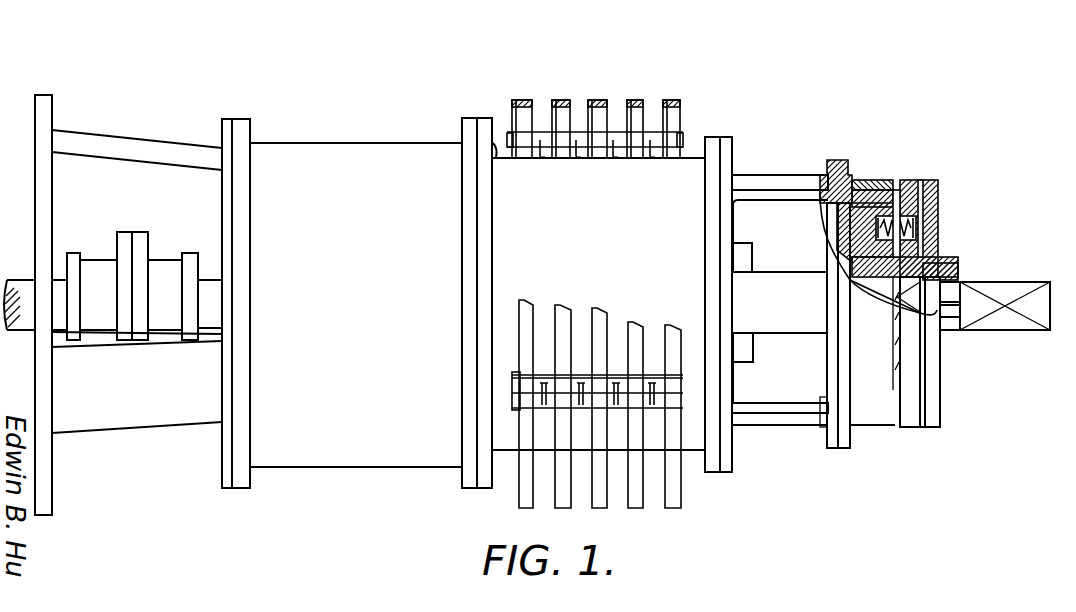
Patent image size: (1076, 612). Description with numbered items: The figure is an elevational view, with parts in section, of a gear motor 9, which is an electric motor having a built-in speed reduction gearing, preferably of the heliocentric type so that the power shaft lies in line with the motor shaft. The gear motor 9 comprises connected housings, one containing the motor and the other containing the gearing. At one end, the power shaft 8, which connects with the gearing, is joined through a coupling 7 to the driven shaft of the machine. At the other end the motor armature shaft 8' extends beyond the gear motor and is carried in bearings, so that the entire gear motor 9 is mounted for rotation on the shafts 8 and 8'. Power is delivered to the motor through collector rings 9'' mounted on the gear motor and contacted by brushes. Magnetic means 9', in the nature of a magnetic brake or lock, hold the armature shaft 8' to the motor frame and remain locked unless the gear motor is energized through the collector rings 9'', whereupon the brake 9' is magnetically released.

The coupling 7 is at (160, 262).
The shaft 8 is at (202, 266).
The gear motor 9 is at (356, 277).
The magnetic means 9' is at (889, 224).
The collector rings 9'' is at (595, 99).
The motor armature shaft 8' is at (995, 289).